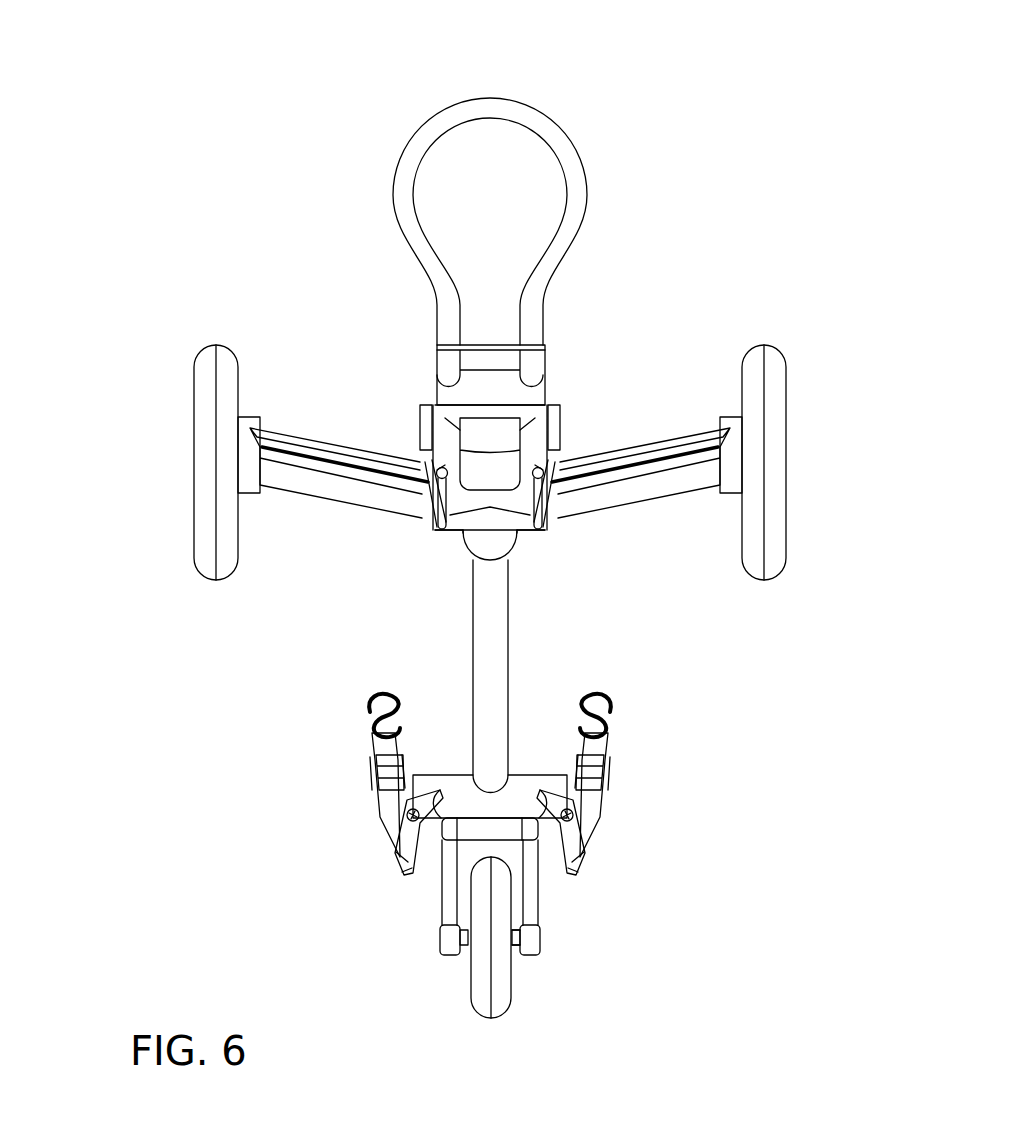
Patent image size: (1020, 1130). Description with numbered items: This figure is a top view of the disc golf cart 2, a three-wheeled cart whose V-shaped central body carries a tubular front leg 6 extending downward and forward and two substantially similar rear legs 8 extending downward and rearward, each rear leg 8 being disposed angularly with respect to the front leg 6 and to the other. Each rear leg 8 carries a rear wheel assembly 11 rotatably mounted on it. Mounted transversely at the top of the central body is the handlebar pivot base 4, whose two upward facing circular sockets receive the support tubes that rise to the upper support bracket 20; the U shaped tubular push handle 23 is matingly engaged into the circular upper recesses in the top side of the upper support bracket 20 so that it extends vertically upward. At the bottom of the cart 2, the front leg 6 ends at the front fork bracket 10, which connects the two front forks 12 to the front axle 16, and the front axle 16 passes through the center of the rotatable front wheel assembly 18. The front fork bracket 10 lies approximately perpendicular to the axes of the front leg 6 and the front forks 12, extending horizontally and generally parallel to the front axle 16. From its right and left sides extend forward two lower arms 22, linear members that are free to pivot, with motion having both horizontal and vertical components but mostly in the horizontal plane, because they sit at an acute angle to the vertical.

The disc golf cart 2 is at (150, 740).
The handlebar pivot base 4 is at (503, 542).
The tubular front leg 6 is at (495, 655).
The rear legs 8 is at (345, 440).
The front fork bracket 10 is at (203, 362).
The rear wheel assembly 11 is at (527, 778).
The front forks 12 is at (540, 885).
The front axle 16 is at (515, 950).
The front wheel assembly 18 is at (482, 990).
The upper support bracket 20 is at (530, 388).
The lower arms 22 is at (403, 870).
The U shaped tubular push handle 23 is at (493, 110).